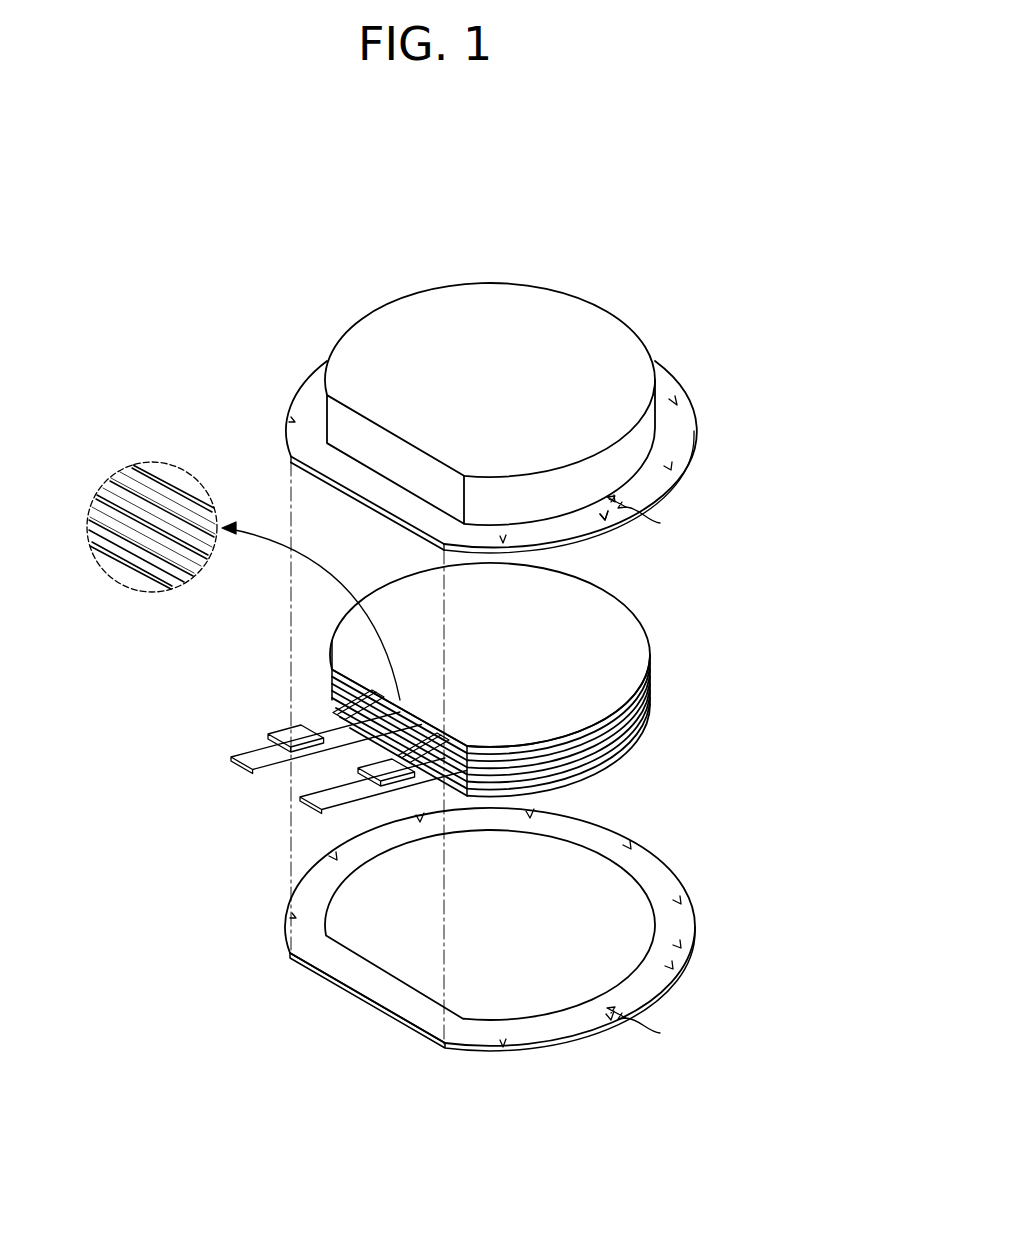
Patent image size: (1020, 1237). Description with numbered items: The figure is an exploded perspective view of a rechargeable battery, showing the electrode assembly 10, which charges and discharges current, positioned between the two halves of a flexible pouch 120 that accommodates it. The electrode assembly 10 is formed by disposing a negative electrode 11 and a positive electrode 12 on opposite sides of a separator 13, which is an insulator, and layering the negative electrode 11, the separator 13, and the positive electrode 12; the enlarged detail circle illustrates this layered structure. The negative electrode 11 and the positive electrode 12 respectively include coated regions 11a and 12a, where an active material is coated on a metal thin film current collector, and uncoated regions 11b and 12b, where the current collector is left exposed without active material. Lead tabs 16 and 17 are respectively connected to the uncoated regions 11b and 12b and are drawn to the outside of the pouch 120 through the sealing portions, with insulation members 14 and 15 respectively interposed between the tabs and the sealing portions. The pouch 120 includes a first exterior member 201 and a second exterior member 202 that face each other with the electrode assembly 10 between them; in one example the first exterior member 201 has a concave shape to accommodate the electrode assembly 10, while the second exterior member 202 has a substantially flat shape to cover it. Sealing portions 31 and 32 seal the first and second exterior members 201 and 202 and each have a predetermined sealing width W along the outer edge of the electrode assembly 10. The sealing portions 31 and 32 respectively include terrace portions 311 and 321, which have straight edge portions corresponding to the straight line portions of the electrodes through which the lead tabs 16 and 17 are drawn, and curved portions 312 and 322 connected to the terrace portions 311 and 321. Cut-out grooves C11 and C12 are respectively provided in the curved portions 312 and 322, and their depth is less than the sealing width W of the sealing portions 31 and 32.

The electrode assembly 10 is at (460, 689).
The negative electrode 11 is at (232, 627).
The coated region 11a is at (353, 646).
The uncoated region 11b is at (335, 676).
The positive electrode 12 is at (540, 684).
The coated region 12a is at (508, 755).
The uncoated region 12b is at (445, 734).
The separator 13 is at (170, 500).
The insulation member 14 is at (282, 724).
The insulation member 15 is at (353, 770).
The lead tab 16 is at (250, 752).
The lead tab 17 is at (320, 798).
The sealing portion 31 is at (445, 680).
The sealing portion 32 is at (448, 928).
The pouch 120 is at (753, 608).
The first exterior member 201 is at (605, 297).
The second exterior member 202 is at (448, 943).
The terrace portion 311 is at (366, 487).
The curved portion 312 is at (693, 413).
The terrace portion 321 is at (356, 985).
The curved portion 322 is at (693, 935).
The sealing width W is at (645, 772).
The cut-out groove C11 is at (605, 520).
The cut-out groove C12 is at (610, 1020).